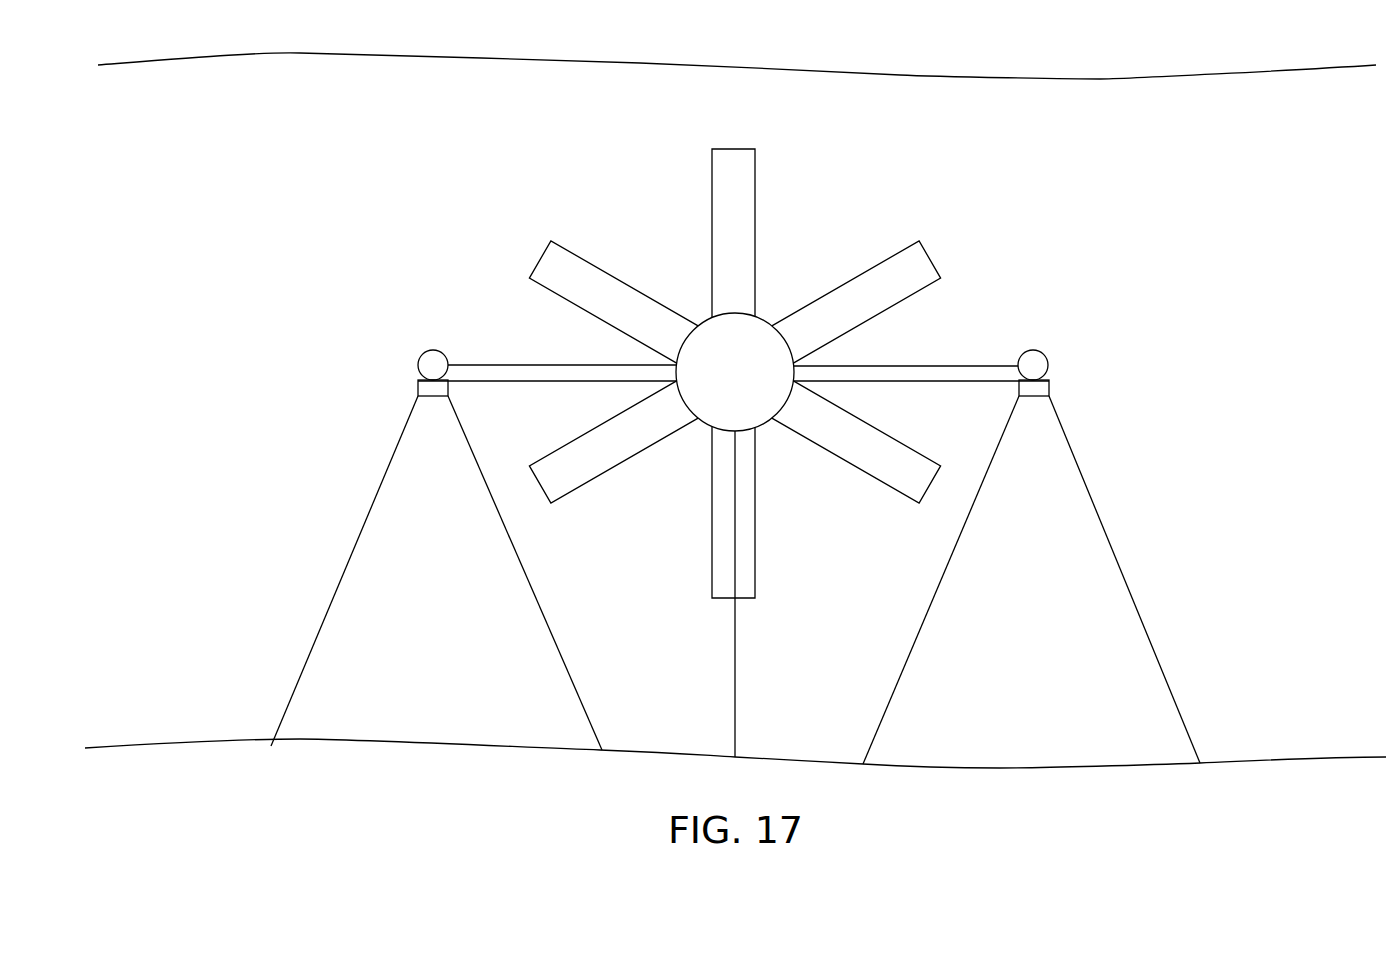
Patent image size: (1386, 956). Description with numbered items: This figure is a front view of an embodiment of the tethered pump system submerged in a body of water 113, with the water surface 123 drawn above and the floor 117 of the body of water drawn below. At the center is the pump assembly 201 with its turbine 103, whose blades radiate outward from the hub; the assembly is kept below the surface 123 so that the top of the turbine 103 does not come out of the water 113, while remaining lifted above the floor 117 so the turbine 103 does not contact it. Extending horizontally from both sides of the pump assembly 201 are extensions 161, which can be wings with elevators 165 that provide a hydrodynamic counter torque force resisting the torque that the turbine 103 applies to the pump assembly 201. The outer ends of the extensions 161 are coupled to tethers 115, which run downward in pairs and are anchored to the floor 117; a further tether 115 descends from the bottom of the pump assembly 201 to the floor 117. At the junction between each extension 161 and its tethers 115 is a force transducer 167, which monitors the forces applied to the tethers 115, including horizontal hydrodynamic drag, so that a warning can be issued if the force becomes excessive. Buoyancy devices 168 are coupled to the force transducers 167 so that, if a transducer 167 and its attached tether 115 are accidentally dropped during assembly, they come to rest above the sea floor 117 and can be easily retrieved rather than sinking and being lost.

The water 113 is at (737, 50).
The surface 123 is at (899, 75).
The turbine 103 is at (921, 268).
The pump assembly 201 is at (765, 340).
The extensions 161 is at (733, 379).
The elevators 165 is at (528, 378).
The buoyancy devices 168 is at (419, 357).
The force transducers 167 is at (430, 385).
The tethers 115 is at (553, 630).
The floor 117 is at (380, 754).